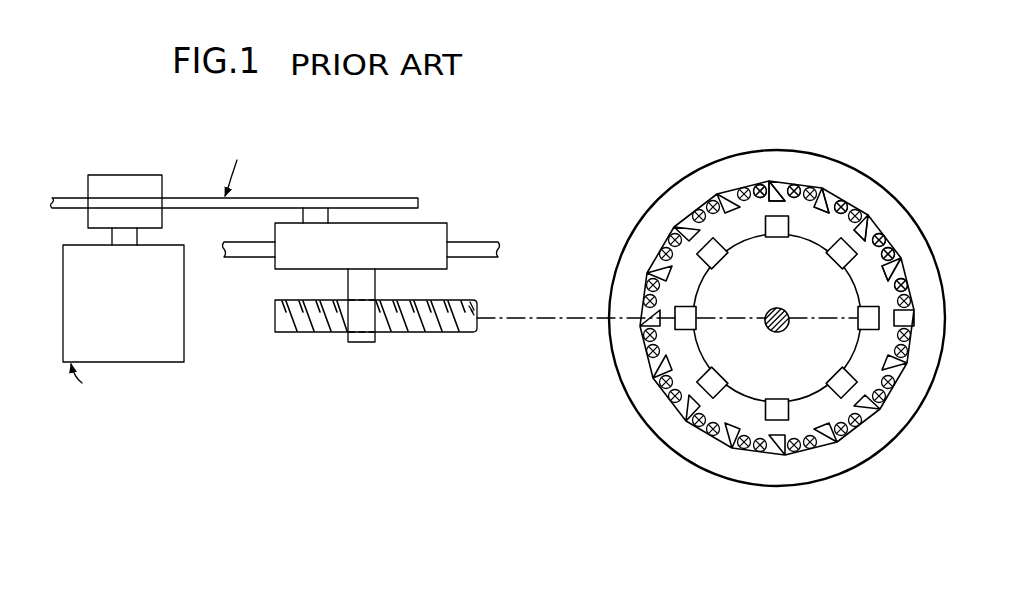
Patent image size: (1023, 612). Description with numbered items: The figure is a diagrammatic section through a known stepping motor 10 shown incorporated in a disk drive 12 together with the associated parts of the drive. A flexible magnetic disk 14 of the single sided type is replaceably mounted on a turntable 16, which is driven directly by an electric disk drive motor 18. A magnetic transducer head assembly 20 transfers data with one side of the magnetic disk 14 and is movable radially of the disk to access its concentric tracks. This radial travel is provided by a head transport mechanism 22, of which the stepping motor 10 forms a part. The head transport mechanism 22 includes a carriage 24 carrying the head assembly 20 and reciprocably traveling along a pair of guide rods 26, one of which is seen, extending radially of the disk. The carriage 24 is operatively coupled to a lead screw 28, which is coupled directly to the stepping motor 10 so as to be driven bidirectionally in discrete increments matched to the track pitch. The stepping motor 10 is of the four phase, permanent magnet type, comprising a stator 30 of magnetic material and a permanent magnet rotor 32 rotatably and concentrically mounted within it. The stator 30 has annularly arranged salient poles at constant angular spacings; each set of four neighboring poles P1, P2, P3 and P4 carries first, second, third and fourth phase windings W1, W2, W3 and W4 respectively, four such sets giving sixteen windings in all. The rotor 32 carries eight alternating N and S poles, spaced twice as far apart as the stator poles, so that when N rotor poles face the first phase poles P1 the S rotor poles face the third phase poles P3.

The stepping motor 10 is at (662, 173).
The disk drive 12 is at (80, 166).
The magnetic disk 14 is at (192, 198).
The turntable 16 is at (88, 212).
The disk drive motor 18 is at (172, 337).
The magnetic transducer head assembly 20 is at (316, 212).
The head transport mechanism 22 is at (478, 240).
The carriage 24 is at (433, 232).
The guide rods 26 is at (257, 247).
The lead screw 28 is at (433, 325).
The stator 30 is at (641, 425).
The permanent magnet rotor 32 is at (866, 358).
The first phase winding W1 is at (790, 192).
The second phase winding W2 is at (829, 200).
The third phase winding W3 is at (867, 228).
The fourth phase winding W4 is at (906, 286).
The first phase stator pole P1 is at (778, 190).
The second phase stator pole P2 is at (845, 198).
The third phase stator pole P3 is at (878, 242).
The fourth phase stator pole P4 is at (895, 272).